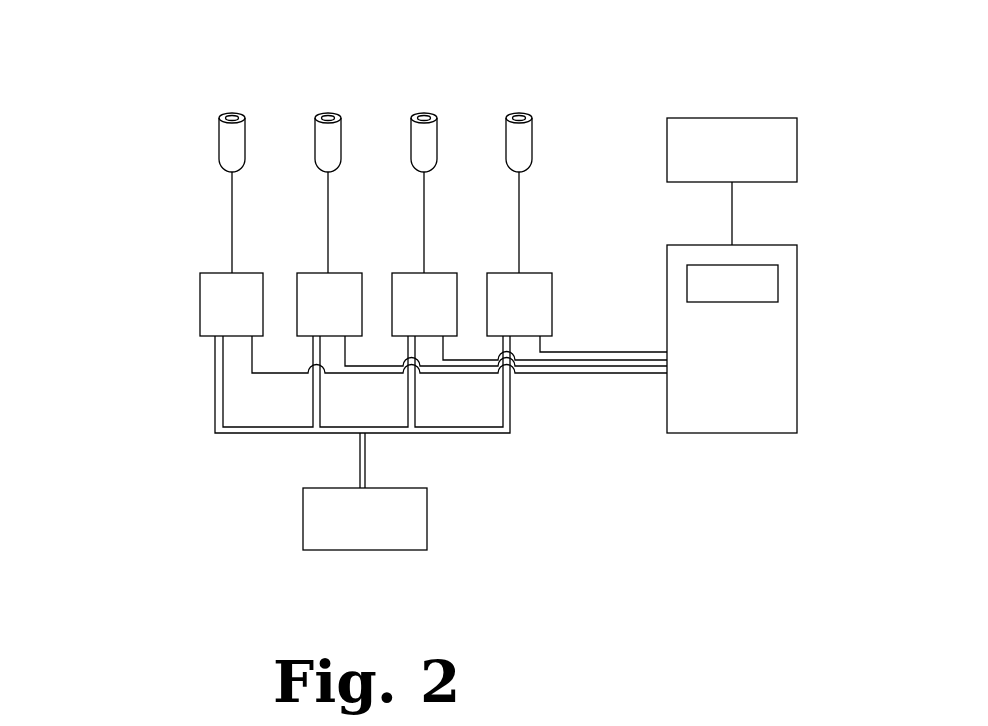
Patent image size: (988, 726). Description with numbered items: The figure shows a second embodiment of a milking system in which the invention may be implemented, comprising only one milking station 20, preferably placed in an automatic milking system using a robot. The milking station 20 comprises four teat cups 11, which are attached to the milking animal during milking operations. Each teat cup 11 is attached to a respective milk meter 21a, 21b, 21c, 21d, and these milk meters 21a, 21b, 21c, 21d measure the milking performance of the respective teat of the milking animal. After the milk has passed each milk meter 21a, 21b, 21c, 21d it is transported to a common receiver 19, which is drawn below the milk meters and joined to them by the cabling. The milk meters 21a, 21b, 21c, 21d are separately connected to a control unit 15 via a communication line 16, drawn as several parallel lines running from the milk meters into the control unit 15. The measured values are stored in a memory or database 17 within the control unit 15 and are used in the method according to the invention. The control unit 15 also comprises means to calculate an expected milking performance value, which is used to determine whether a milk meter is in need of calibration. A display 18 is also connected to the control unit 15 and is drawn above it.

The milking station 20 is at (165, 70).
The teat cups 11 is at (219, 150).
The milk meter 21a is at (219, 302).
The milk meter 21b is at (305, 291).
The milk meter 21c is at (416, 294).
The milk meter 21d is at (528, 286).
The communication line 16 is at (628, 358).
The control unit 15 is at (780, 378).
The memory or database 17 is at (768, 285).
The display 18 is at (773, 157).
The common receiver 19 is at (337, 513).